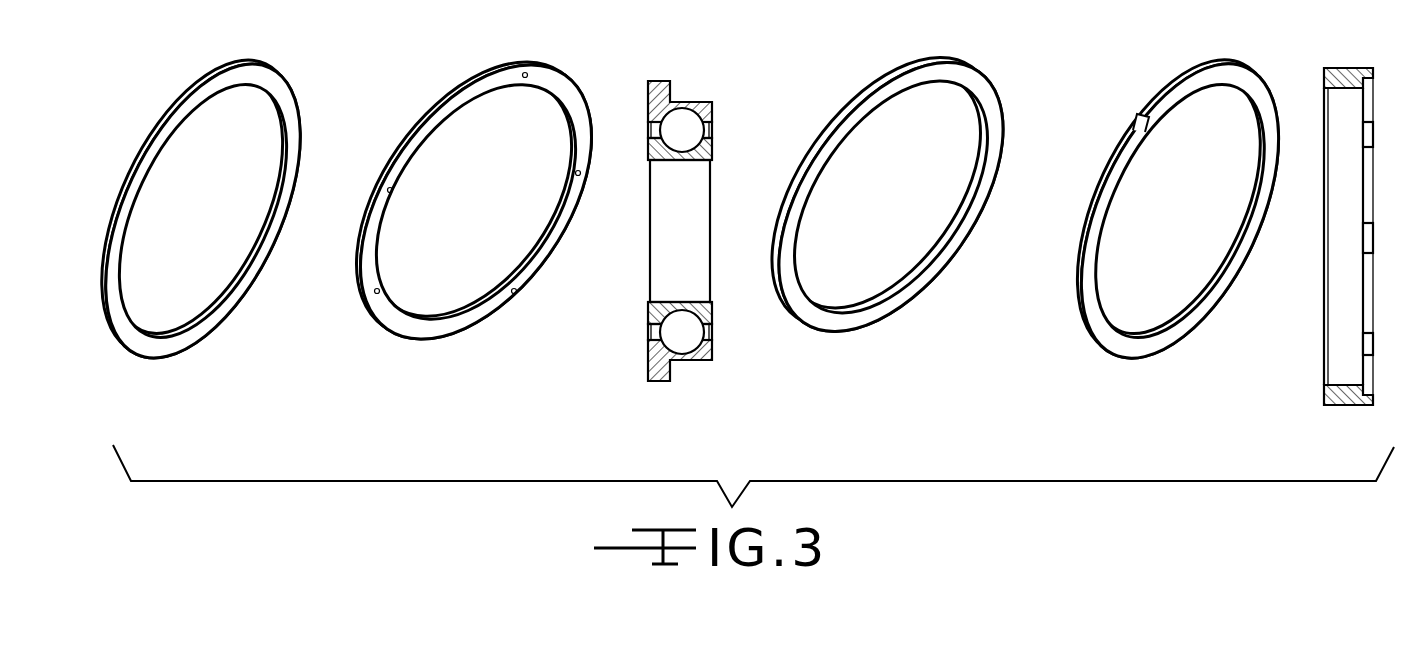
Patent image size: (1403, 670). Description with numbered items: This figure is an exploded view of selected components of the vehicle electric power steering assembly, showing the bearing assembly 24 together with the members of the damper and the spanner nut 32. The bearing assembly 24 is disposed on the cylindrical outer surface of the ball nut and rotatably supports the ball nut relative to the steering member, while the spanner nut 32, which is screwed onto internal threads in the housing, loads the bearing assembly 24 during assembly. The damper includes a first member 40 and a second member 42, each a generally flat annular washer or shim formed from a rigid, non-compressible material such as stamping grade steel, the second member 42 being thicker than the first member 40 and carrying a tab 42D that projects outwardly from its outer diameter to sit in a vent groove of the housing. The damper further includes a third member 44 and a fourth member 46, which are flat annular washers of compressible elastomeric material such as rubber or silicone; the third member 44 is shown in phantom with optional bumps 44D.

The first member 40 is at (158, 366).
The third member 44 is at (473, 203).
The bumps 44D is at (368, 285).
The bearing assembly 24 is at (716, 117).
The fourth member 46 is at (860, 338).
The second member 42 is at (1178, 212).
The tab 42D is at (1133, 122).
The spanner nut 32 is at (1343, 410).